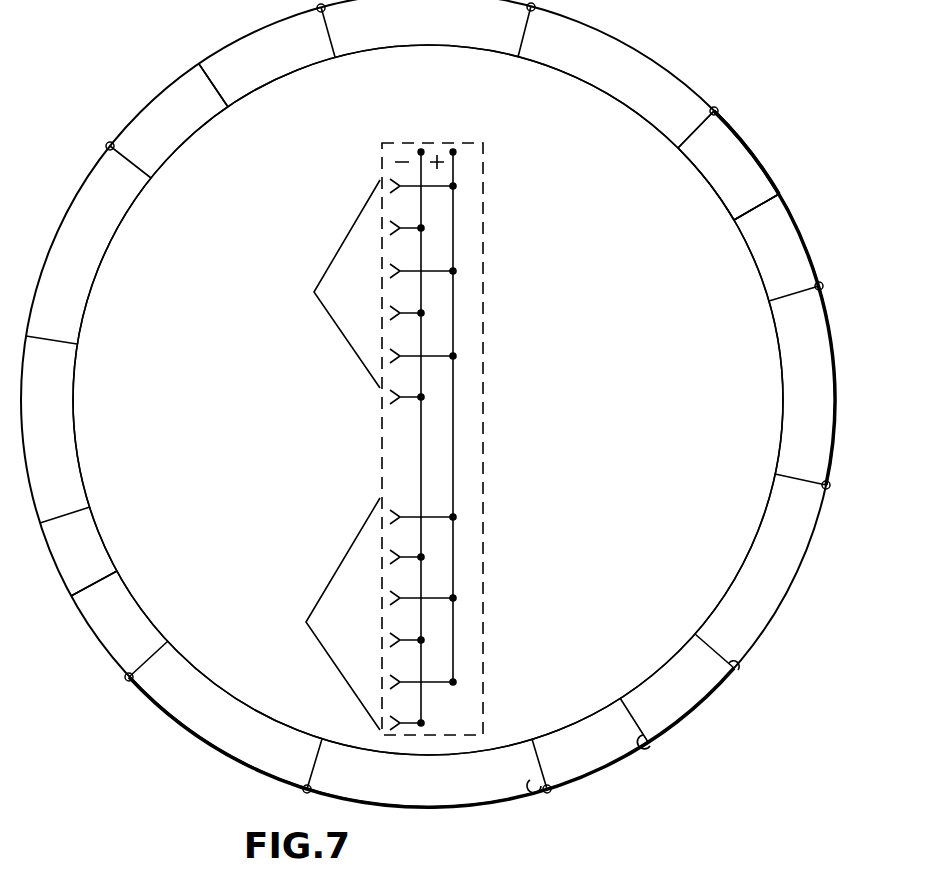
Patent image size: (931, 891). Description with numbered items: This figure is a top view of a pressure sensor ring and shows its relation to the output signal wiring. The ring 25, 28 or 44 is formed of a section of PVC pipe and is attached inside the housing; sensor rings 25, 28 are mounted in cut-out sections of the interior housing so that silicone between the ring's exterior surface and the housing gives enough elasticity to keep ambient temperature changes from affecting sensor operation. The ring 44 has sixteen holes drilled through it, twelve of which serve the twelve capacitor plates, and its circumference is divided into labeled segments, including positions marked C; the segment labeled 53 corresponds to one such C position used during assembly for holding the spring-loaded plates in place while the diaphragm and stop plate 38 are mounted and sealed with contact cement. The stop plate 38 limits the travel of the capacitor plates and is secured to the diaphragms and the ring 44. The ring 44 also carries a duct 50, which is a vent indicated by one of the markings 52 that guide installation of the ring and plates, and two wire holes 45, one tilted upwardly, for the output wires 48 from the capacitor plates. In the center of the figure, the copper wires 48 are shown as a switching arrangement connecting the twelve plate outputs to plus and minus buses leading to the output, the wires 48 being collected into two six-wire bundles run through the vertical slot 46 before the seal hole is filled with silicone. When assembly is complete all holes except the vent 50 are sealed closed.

The sensor ring 25 is at (760, 152).
The sensor ring 28 is at (706, 184).
The sensor ring 44 is at (728, 165).
The calibration segment C 53 is at (200, 66).
The markings 52 is at (752, 634).
The vertical slot 46 is at (740, 666).
The duct 50 is at (652, 737).
The wire holes 45 is at (533, 795).
The diaphragm stop plates 38 is at (596, 524).
The copper wires 48 is at (503, 318).